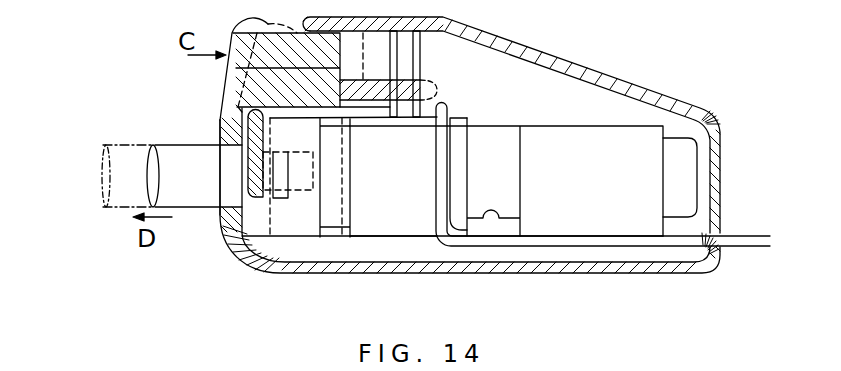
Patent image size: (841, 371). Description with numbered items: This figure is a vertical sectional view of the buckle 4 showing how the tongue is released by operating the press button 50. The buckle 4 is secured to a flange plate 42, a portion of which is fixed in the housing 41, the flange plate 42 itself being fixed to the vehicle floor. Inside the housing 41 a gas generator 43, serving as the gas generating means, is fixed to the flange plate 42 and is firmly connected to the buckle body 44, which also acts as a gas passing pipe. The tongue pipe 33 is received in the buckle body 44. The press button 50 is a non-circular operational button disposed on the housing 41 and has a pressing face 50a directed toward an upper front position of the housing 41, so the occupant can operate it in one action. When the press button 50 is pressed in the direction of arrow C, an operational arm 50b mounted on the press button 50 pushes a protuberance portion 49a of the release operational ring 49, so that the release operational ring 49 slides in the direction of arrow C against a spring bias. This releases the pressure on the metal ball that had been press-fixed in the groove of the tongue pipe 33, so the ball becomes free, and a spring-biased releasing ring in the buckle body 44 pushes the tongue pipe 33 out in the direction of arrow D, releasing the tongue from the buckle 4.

The buckle 4 is at (522, 34).
The tongue pipe 33 is at (197, 208).
The housing 41 is at (643, 127).
The flange plate 42 is at (742, 235).
The gas generator 43 is at (632, 112).
The buckle body 44 is at (410, 238).
The release operational ring 49 is at (327, 237).
The protuberance portion 49a is at (278, 198).
The press button 50 is at (233, 32).
The pressing face 50a is at (231, 78).
The operational arm 50b is at (251, 198).